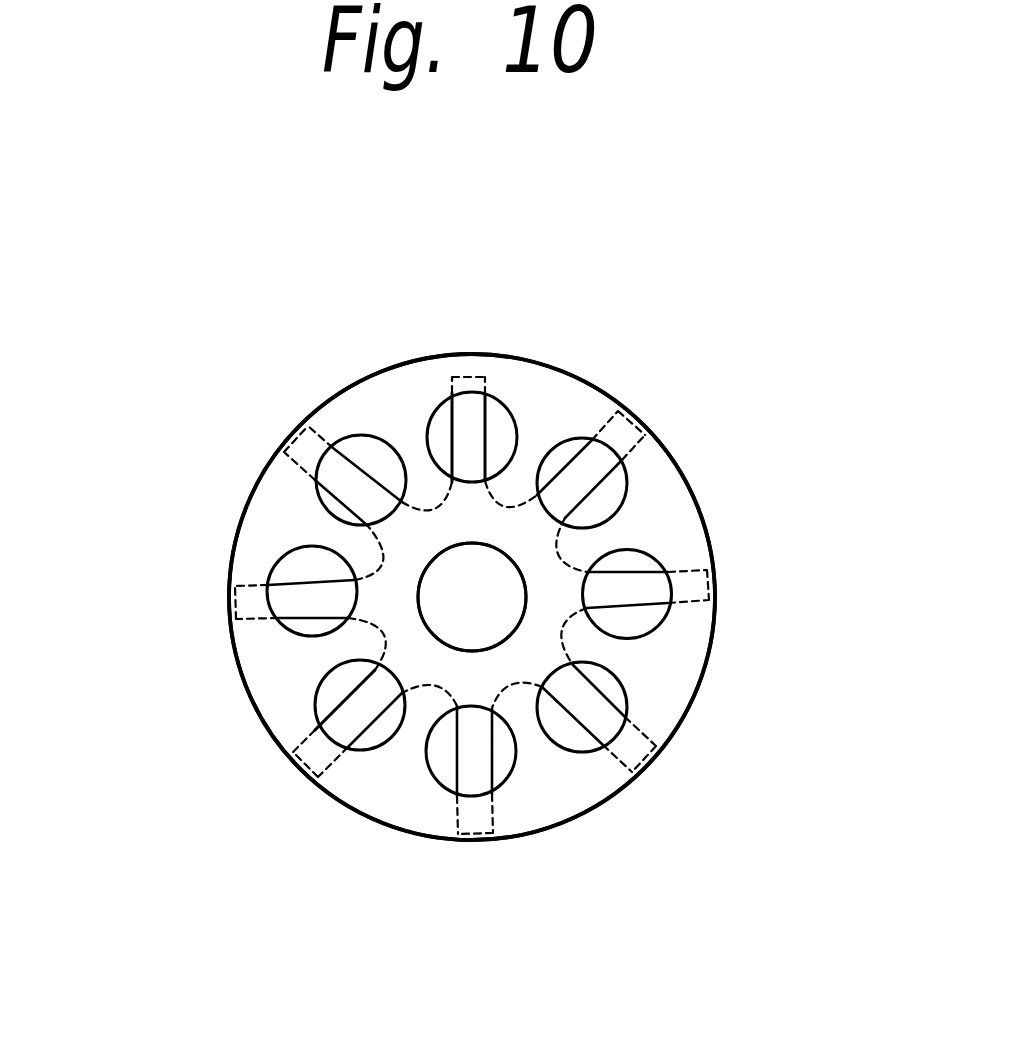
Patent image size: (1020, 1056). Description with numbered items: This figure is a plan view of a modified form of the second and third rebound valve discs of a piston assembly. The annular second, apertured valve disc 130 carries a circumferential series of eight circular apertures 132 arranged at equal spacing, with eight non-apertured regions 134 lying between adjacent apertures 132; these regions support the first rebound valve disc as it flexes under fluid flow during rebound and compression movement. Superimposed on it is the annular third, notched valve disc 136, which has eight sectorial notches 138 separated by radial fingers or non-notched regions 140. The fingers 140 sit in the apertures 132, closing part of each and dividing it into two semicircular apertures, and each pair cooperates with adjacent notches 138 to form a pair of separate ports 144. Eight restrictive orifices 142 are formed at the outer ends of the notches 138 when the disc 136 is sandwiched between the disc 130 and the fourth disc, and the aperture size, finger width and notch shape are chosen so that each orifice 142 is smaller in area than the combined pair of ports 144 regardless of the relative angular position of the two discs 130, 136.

The second apertured valve disc 130 is at (590, 403).
The circular apertures 132 is at (308, 568).
The non-apertured regions 134 is at (643, 522).
The third notched valve disc 136 is at (488, 382).
The sectorial notches 138 is at (452, 378).
The radial fingers 140 is at (295, 427).
The restrictive orifices 142 is at (563, 367).
The ports 144 is at (327, 723).